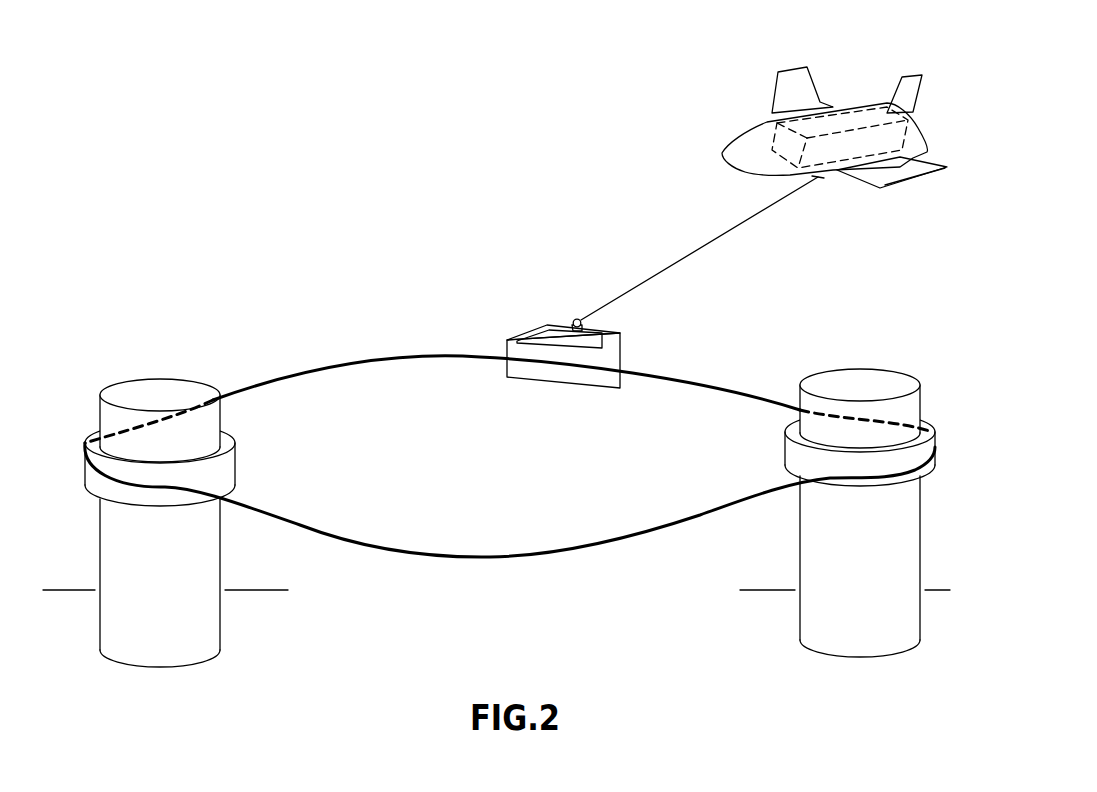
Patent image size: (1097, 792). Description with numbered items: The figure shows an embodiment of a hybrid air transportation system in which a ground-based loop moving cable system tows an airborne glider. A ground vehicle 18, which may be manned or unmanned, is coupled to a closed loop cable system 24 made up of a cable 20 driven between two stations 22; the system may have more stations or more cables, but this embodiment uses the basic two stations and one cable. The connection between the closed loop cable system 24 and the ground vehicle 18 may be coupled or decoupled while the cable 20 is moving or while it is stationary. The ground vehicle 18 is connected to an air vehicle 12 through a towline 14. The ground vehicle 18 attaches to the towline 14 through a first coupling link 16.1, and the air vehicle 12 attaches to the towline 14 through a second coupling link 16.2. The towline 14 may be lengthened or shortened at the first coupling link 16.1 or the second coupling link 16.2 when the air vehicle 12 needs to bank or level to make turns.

The air vehicle 12 is at (744, 133).
The towline 14 is at (697, 247).
The first coupling link 16.1 is at (577, 316).
The second coupling link 16.2 is at (818, 177).
The ground vehicle 18 is at (528, 335).
The cable 20 is at (447, 363).
The stations 22 is at (150, 393).
The closed loop cable system 24 is at (337, 352).